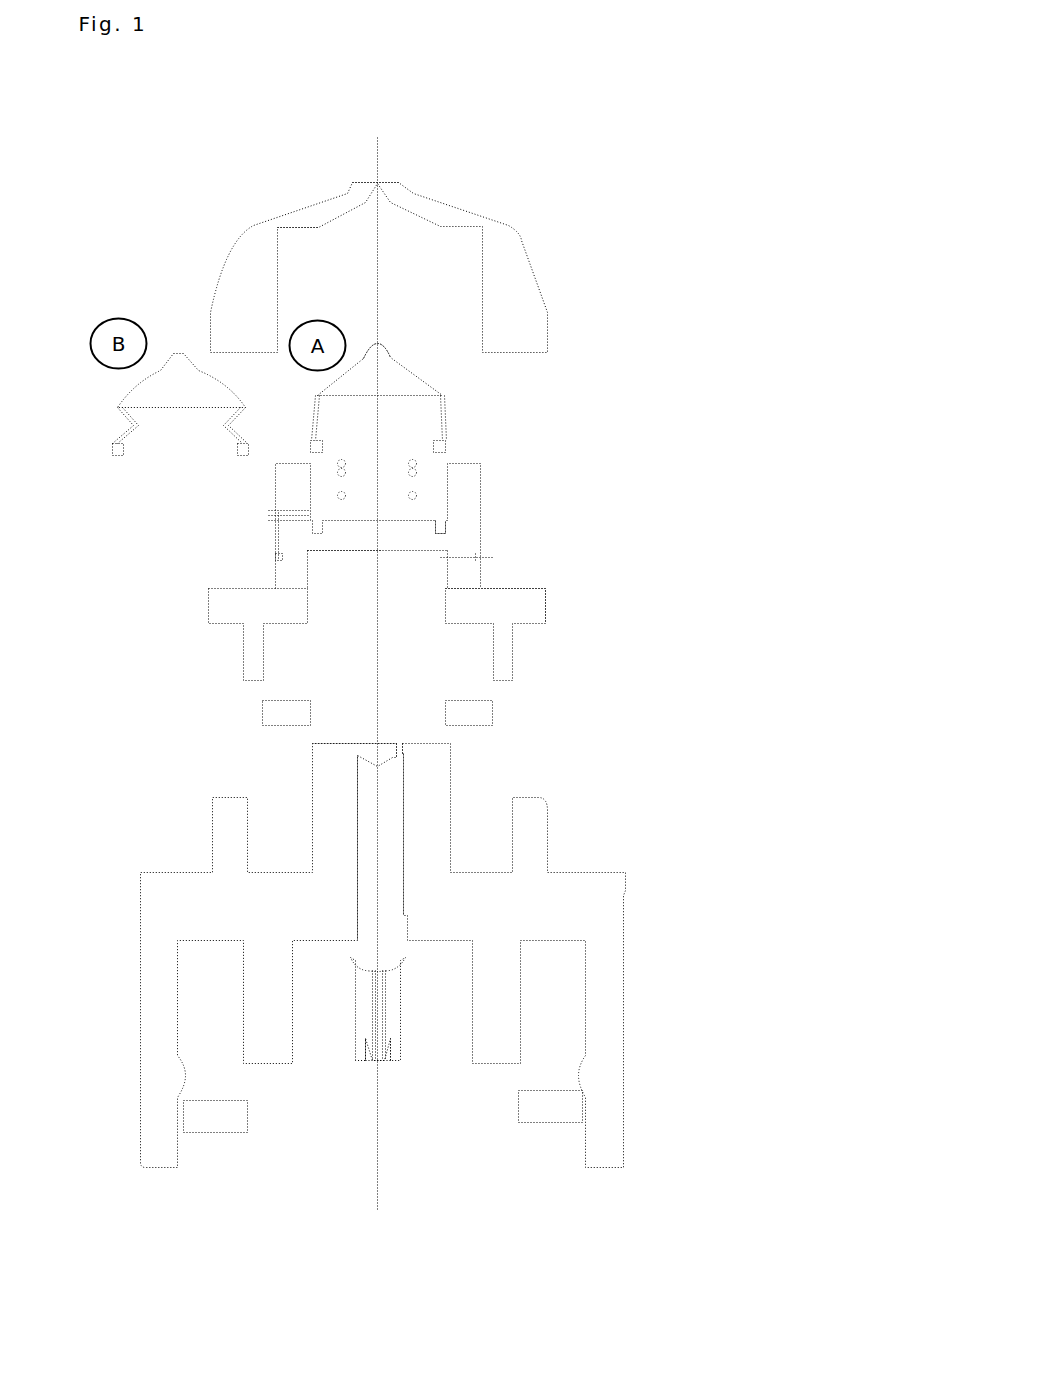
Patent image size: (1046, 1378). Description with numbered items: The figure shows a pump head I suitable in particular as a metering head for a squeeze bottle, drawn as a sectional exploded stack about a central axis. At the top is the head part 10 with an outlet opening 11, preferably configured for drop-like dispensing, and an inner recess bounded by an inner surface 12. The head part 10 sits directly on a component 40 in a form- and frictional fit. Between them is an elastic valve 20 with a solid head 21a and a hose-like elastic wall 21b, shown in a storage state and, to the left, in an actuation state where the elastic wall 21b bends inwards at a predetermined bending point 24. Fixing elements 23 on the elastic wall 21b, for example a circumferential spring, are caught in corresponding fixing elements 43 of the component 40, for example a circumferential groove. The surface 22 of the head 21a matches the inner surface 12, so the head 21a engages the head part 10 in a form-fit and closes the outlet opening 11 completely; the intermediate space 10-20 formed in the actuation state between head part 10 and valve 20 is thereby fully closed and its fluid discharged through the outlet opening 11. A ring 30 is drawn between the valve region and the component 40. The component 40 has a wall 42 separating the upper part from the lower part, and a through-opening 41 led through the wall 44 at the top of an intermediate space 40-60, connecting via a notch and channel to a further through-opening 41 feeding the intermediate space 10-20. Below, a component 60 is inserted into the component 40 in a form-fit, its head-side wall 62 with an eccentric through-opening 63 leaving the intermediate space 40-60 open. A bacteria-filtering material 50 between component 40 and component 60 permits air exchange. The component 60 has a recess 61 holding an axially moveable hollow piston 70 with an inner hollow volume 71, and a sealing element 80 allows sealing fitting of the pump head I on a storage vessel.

The pump head I is at (188, 167).
The intermediate space 10-20 is at (450, 260).
The head part 10 is at (507, 243).
The outlet opening 11 is at (380, 173).
The inner surface 12 is at (331, 225).
The elastic valve 20 is at (445, 398).
The head 21a is at (400, 382).
The elastic wall 21b is at (442, 417).
The surface 22 is at (404, 354).
The fixing elements 23 is at (442, 447).
The predetermined bending point 24 is at (140, 427).
The intermediate ring 30 is at (416, 495).
The intermediate space 40-60 is at (332, 572).
The component 40 is at (480, 535).
The through-opening 41 is at (268, 512).
The wall 42 is at (365, 538).
The fixing elements 43 is at (440, 533).
The wall 44 is at (473, 580).
The bacteria-filtering material 50 is at (492, 708).
The component 60 is at (547, 837).
The recess 61 is at (387, 874).
The wall 62 is at (333, 763).
The eccentric through-opening 63 is at (398, 738).
The hollow piston 70 is at (400, 990).
The inner hollow volume 71 is at (378, 1062).
The sealing element 80 is at (582, 1107).